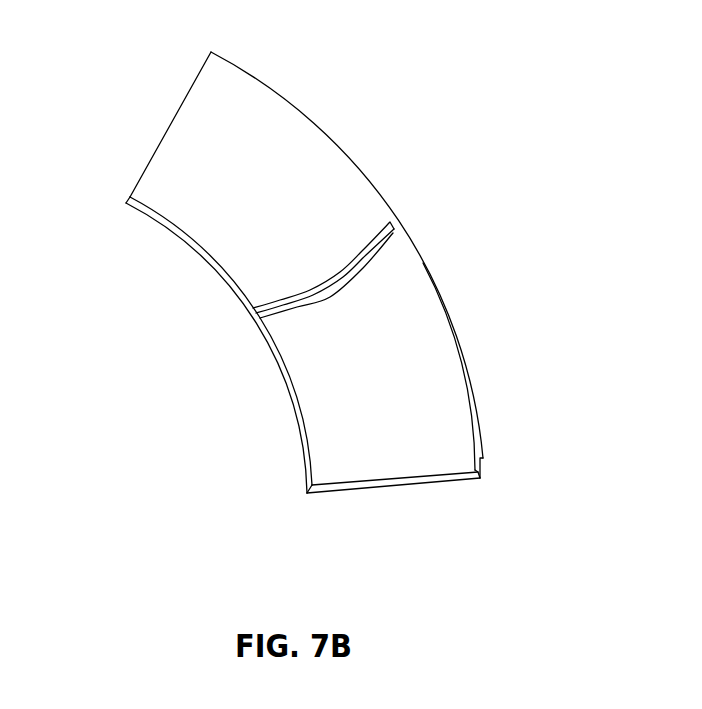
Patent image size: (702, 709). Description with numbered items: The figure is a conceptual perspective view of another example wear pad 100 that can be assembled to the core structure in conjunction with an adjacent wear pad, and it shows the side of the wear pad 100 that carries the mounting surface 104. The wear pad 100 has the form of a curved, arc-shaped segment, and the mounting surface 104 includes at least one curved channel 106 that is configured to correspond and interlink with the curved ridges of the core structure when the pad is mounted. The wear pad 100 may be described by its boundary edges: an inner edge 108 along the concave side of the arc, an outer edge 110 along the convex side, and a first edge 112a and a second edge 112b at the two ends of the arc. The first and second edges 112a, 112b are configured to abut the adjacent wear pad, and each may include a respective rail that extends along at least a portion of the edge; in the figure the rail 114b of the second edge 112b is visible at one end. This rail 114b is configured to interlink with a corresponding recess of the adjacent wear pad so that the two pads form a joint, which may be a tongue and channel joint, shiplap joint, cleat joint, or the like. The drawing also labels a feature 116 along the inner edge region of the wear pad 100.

The wear pad 100 is at (147, 75).
The mounting surface 104 is at (263, 213).
The curved channel 106 is at (354, 276).
The inner edge 108 is at (266, 345).
The outer edge 110 is at (360, 165).
The first edge 112a is at (175, 123).
The second edge 112b is at (402, 484).
The rail 114b is at (482, 467).
The inner wall surface 116 is at (163, 222).